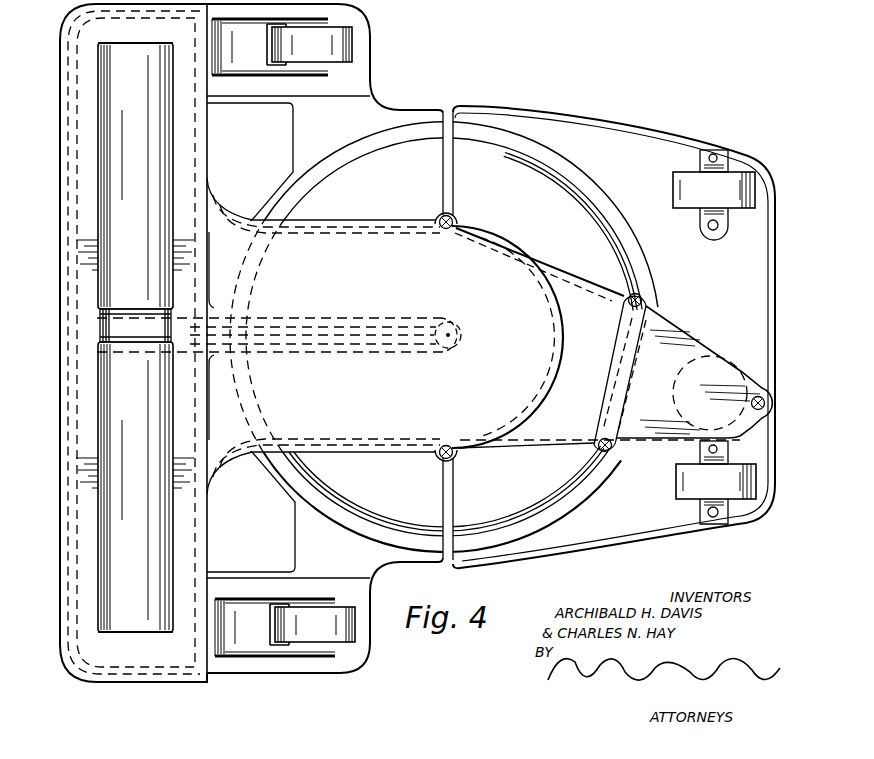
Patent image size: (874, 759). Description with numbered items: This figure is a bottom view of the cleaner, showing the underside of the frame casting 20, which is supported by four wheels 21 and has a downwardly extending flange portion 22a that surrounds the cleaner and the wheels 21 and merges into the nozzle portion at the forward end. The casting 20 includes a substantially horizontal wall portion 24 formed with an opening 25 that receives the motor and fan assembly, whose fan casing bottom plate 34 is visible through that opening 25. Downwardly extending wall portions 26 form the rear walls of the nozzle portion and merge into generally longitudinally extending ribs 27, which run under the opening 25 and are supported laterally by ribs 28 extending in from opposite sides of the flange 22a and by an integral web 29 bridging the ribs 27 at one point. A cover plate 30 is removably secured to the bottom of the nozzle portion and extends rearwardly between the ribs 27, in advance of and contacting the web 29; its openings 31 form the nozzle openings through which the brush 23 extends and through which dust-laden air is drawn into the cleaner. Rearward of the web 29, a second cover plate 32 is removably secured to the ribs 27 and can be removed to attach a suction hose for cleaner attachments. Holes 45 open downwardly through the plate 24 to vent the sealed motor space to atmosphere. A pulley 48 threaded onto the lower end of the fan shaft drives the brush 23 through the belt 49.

The frame casting 20 is at (518, 102).
The wheels 21 is at (340, 50).
The flange portion 22a is at (655, 128).
The brush 23 is at (122, 190).
The horizontal wall portion 24 is at (358, 122).
The opening 25 is at (542, 160).
The downwardly extending wall portions 26 is at (200, 630).
The ribs 27 is at (562, 268).
The ribs 28 is at (450, 175).
The web 29 is at (582, 310).
The cover plate 30 is at (356, 233).
The openings 31 is at (98, 98).
The cover plate 32 is at (680, 355).
The bottom plate 34 is at (560, 205).
The holes 45 is at (262, 145).
The pulley 48 is at (460, 328).
The belt 49 is at (318, 318).